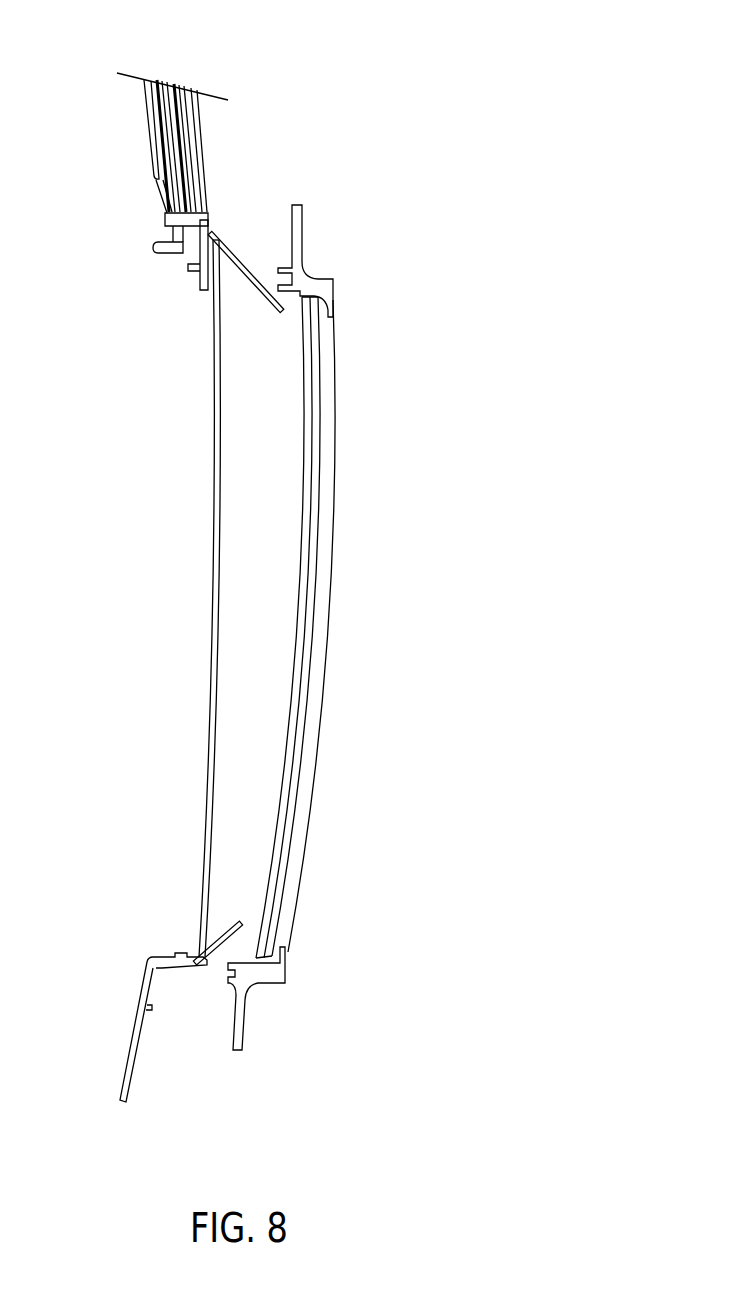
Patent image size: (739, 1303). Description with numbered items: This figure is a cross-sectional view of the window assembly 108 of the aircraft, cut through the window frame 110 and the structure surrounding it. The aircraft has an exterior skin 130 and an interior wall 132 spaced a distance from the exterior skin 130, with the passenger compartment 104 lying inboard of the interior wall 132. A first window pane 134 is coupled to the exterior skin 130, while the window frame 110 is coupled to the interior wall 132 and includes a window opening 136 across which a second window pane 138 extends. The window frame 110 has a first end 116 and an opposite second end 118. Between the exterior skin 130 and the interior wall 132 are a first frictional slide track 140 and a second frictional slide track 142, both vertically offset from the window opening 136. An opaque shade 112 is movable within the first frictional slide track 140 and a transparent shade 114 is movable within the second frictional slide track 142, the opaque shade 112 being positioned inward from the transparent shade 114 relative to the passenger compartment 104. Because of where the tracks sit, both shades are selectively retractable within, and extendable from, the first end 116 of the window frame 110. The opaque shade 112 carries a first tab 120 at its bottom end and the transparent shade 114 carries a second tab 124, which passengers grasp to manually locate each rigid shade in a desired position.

The passenger compartment 104 is at (110, 533).
The window assembly 108 is at (280, 152).
The window frame 110 is at (148, 990).
The opaque shade 112 is at (165, 232).
The transparent shade 114 is at (200, 257).
The first end 116 is at (222, 198).
The second end 118 is at (182, 984).
The first tab 120 is at (157, 263).
The second tab 124 is at (190, 271).
The exterior skin 130 is at (302, 240).
The interior wall 132 is at (128, 1057).
The first window pane 134 is at (297, 910).
The window opening 136 is at (172, 933).
The second window pane 138 is at (218, 443).
The first frictional slide track 140 is at (160, 85).
The second frictional slide track 142 is at (192, 92).